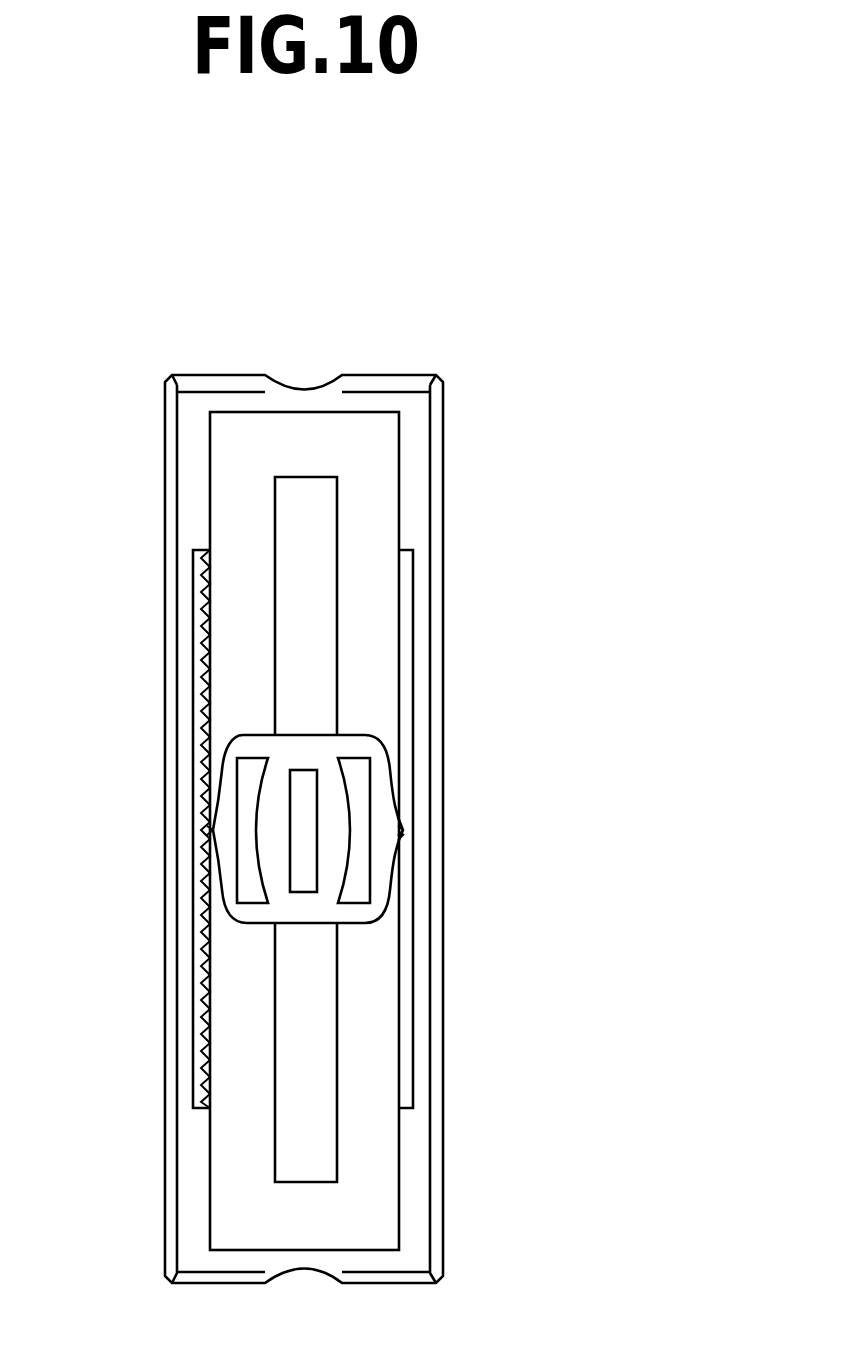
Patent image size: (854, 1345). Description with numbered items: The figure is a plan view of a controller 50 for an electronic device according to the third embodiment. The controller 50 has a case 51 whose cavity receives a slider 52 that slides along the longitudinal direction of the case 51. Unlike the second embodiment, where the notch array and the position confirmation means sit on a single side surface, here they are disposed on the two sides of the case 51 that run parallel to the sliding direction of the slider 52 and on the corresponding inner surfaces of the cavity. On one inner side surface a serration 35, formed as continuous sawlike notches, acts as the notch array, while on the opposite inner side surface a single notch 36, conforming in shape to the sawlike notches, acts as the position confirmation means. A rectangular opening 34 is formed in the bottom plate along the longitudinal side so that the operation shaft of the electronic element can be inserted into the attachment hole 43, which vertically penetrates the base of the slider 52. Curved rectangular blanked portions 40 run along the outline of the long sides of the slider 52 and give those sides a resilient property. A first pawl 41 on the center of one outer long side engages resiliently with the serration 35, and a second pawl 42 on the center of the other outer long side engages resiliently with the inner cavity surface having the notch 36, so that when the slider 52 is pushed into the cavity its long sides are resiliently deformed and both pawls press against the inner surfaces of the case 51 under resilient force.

The controller 50 is at (437, 305).
The case 51 is at (187, 1178).
The opening 34 is at (302, 522).
The serration 35 is at (193, 680).
The slider 52 is at (352, 924).
The first pawl 41 is at (210, 824).
The notch 36 is at (407, 825).
The second pawl 42 is at (402, 842).
The blanked portions 40 is at (250, 770).
The attachment hole 43 is at (305, 778).